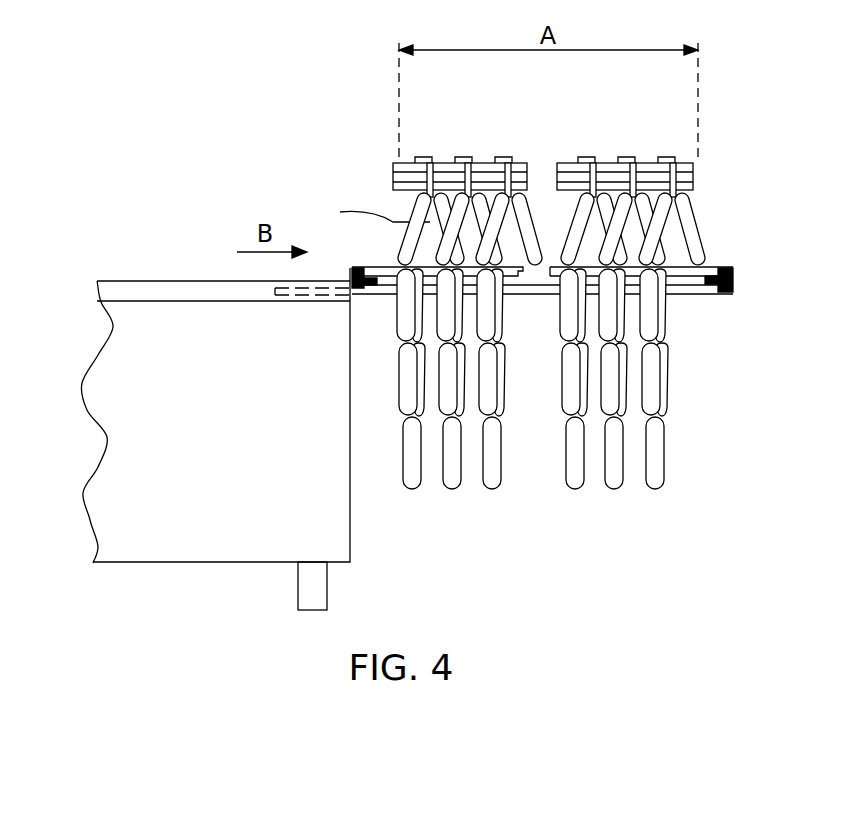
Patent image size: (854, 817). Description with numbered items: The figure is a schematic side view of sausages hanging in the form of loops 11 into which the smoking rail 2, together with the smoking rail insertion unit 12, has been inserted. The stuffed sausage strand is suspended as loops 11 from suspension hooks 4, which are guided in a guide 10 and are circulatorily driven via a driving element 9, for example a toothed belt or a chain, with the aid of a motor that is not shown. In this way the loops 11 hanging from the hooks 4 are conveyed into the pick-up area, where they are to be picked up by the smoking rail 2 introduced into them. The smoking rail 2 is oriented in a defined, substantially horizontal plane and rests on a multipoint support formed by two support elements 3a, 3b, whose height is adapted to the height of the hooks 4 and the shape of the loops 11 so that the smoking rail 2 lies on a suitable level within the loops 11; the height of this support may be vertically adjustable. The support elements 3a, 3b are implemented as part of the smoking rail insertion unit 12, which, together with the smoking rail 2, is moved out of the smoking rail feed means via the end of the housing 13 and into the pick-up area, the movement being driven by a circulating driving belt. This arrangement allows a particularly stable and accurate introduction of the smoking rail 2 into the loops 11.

The smoking rail 2 is at (718, 268).
The support element 3a is at (733, 280).
The support element 3b is at (352, 268).
The suspension hook 4 is at (512, 229).
The driving element 9 is at (413, 165).
The guide 10 is at (448, 162).
The loop 11 is at (665, 483).
The smoking rail insertion unit 12 is at (386, 296).
The housing 13 is at (352, 530).